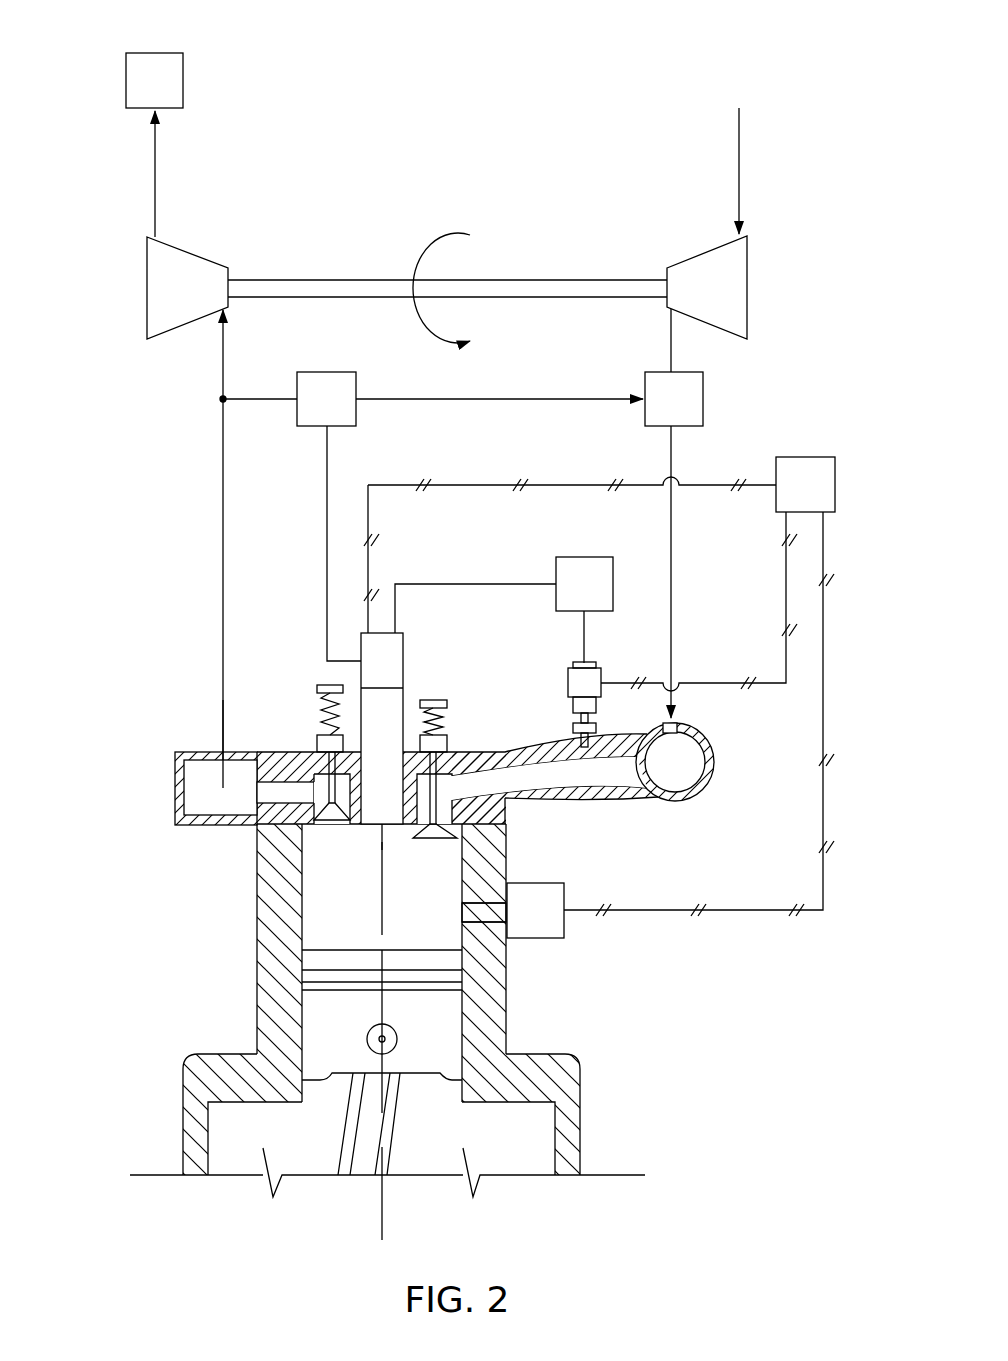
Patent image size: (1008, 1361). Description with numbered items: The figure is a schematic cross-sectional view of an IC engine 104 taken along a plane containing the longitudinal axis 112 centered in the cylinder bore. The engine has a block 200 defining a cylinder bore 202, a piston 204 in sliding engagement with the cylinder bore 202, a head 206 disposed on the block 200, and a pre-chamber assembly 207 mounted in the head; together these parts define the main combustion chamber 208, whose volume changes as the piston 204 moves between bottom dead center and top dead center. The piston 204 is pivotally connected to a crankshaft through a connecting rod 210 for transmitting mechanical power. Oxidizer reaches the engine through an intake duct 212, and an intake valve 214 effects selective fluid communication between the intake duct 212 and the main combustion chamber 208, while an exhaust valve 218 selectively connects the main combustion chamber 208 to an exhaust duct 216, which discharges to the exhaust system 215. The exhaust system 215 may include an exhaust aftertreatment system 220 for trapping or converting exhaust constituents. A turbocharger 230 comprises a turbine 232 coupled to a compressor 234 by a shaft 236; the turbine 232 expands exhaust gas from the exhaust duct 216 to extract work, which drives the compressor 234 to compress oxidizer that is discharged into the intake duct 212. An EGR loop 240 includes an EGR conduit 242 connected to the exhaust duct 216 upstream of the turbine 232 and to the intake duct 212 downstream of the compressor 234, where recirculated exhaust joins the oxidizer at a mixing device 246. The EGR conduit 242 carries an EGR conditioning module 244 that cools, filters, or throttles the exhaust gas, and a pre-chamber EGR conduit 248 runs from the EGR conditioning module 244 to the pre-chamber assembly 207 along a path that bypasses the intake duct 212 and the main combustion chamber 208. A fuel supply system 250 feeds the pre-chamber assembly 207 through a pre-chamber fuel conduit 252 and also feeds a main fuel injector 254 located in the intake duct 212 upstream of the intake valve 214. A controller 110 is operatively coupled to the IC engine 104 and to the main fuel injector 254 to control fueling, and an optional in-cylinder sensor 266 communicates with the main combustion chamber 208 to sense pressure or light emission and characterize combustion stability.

The IC engine 104 is at (768, 66).
The controller 110 is at (821, 493).
The longitudinal axis 112 is at (384, 1222).
The block 200 is at (257, 1000).
The cylinder bore 202 is at (302, 906).
The piston 204 is at (446, 1027).
The head 206 is at (507, 816).
The pre-chamber assembly 207 is at (414, 670).
The main combustion chamber 208 is at (443, 886).
The connecting rod 210 is at (394, 1110).
The intake duct 212 is at (702, 790).
The intake valve 214 is at (470, 762).
The exhaust system 215 is at (86, 268).
The exhaust duct 216 is at (157, 153).
The exhaust valve 218 is at (312, 765).
The exhaust aftertreatment system 220 is at (140, 89).
The turbocharger 230 is at (428, 165).
The turbine 232 is at (203, 297).
The compressor 234 is at (725, 297).
The shaft 236 is at (578, 278).
The EGR loop 240 is at (514, 370).
The EGR conduit 242 is at (428, 402).
The EGR conditioning module 244 is at (311, 408).
The mixing device 246 is at (658, 408).
The pre-chamber EGR conduit 248 is at (327, 505).
The fuel supply system 250 is at (569, 593).
The pre-chamber fuel conduit 252 is at (472, 584).
The main fuel injector 254 is at (568, 680).
The in-cylinder sensor 266 is at (551, 919).